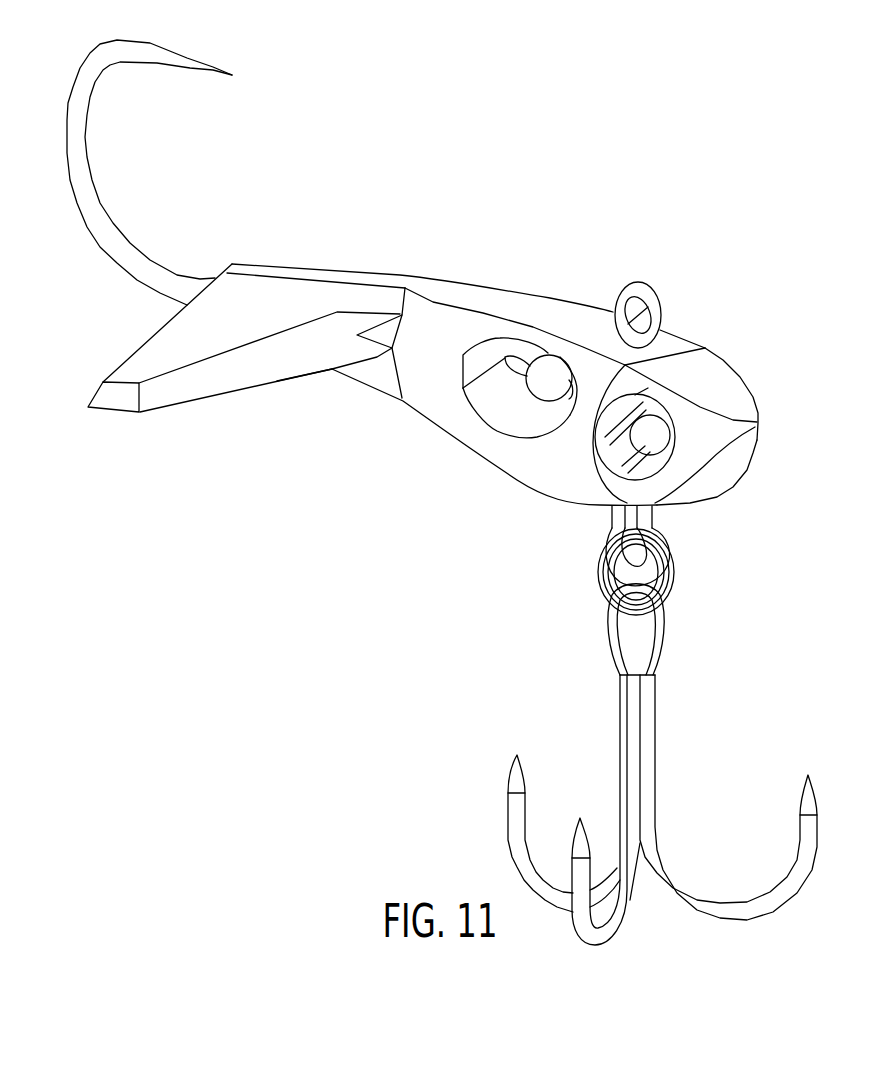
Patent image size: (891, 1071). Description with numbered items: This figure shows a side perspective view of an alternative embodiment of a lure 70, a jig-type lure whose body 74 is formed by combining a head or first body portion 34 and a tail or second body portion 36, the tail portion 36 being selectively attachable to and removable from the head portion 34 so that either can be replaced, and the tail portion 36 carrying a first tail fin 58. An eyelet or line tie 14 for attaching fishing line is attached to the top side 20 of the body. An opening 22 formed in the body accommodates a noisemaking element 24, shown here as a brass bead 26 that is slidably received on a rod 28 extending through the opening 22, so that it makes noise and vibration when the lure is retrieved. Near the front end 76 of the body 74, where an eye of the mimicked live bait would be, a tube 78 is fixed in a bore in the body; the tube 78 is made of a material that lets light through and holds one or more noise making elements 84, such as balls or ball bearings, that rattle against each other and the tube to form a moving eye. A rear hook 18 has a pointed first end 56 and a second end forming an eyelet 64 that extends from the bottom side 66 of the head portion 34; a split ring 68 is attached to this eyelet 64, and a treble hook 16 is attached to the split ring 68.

The eyelet or line tie 14 is at (643, 284).
The treble hook 16 is at (817, 837).
The rear hook 18 is at (197, 60).
The top side 20 is at (472, 246).
The opening 22 is at (508, 399).
The noisemaking element 24 is at (543, 397).
The brass bead 26 is at (547, 362).
The rod 28 is at (528, 383).
The head or first body portion 34 is at (535, 510).
The tail or second body portion 36 is at (204, 412).
The pointed first end 56 is at (220, 73).
The first tail fin 58 is at (117, 400).
The eyelet (second end of hook) 64 is at (673, 517).
The bottom side 66 is at (320, 515).
The split ring 68 is at (675, 563).
The lure 70 is at (793, 298).
The body 74 is at (762, 442).
The front end 76 is at (778, 417).
The tube 78 is at (623, 457).
The noise making elements (balls) 84 is at (652, 428).